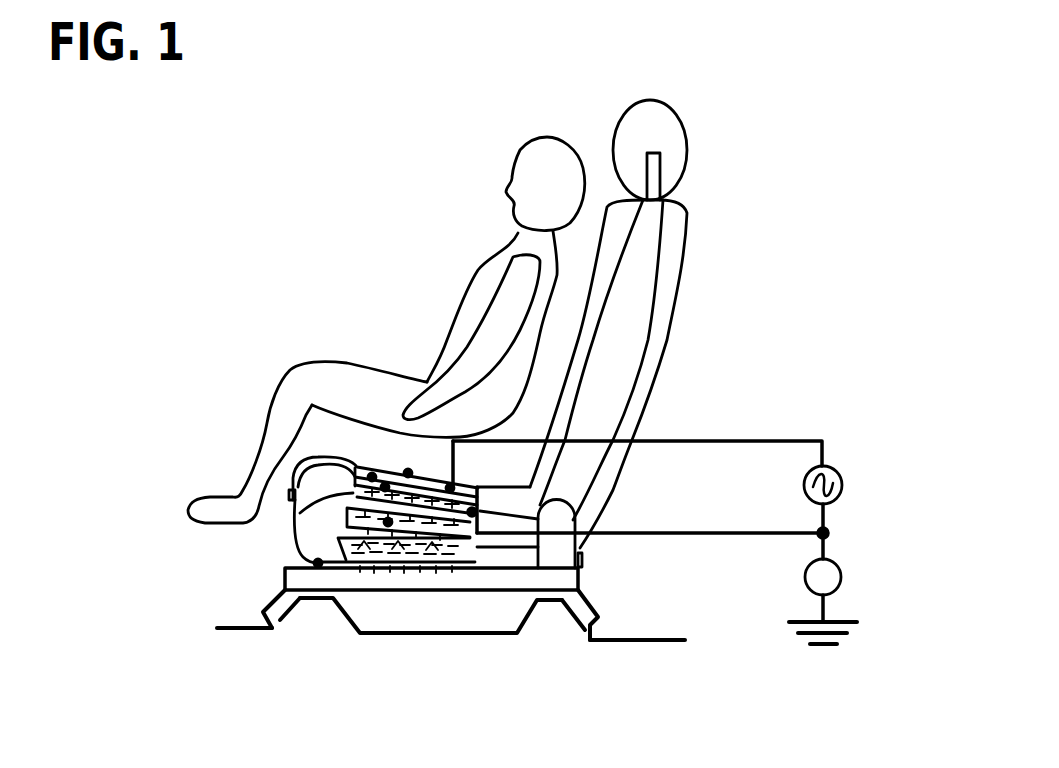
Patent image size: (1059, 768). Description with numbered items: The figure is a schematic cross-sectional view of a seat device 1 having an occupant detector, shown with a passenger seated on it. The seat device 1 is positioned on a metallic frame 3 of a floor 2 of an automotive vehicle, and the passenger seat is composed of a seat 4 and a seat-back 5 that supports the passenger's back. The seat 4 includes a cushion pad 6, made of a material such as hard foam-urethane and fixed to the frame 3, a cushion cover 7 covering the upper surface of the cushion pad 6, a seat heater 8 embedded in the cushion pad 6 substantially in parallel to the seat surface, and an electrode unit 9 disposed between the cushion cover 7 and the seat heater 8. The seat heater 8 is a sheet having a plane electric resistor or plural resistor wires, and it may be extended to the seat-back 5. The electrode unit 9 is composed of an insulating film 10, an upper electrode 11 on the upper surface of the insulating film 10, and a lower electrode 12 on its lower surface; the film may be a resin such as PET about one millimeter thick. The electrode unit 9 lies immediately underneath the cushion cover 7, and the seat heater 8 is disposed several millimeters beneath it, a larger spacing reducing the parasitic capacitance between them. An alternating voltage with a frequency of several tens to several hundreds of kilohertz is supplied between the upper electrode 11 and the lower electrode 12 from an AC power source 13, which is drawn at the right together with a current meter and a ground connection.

The seat device 1 is at (600, 573).
The floor 2 is at (643, 641).
The frame 3 is at (477, 592).
The seat 4 is at (283, 532).
The seat-back 5 is at (690, 278).
The cushion pad 6 is at (300, 560).
The cushion cover 7 is at (408, 473).
The seat heater 8 is at (357, 517).
The electrode unit 9 is at (340, 443).
The insulating film 10 is at (372, 477).
The upper electrode 11 is at (477, 487).
The lower electrode 12 is at (385, 487).
The AC power source 13 is at (842, 485).